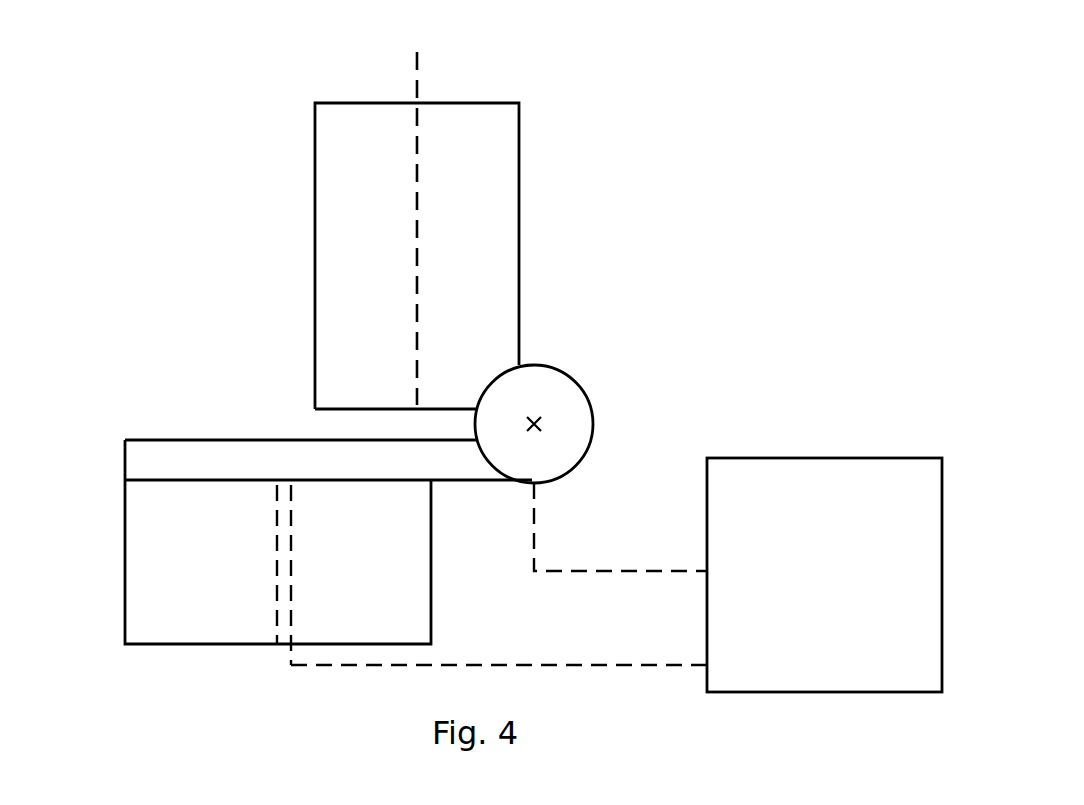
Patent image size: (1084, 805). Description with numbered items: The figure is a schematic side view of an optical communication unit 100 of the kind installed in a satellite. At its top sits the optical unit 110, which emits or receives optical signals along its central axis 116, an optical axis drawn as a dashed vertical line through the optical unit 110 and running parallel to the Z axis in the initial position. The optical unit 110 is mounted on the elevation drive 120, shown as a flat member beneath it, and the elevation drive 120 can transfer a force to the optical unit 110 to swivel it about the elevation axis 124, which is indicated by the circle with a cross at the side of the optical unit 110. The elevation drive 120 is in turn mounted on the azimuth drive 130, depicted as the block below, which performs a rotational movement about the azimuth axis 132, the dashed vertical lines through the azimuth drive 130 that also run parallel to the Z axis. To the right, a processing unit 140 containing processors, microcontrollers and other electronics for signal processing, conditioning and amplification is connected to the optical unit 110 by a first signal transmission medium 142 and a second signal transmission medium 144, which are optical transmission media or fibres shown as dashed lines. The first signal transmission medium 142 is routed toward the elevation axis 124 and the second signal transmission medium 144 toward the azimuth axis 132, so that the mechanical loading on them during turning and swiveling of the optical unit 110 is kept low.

The optical communication unit 100 is at (247, 198).
The optical unit 110 is at (503, 209).
The central axis 116 is at (417, 77).
The elevation drive 120 is at (204, 455).
The elevation axis 124 is at (534, 425).
The azimuth drive 130 is at (152, 585).
The azimuth axis 132 is at (277, 583).
The processing unit 140 is at (770, 480).
The first signal transmission medium 142 is at (593, 570).
The second signal transmission medium 144 is at (462, 665).